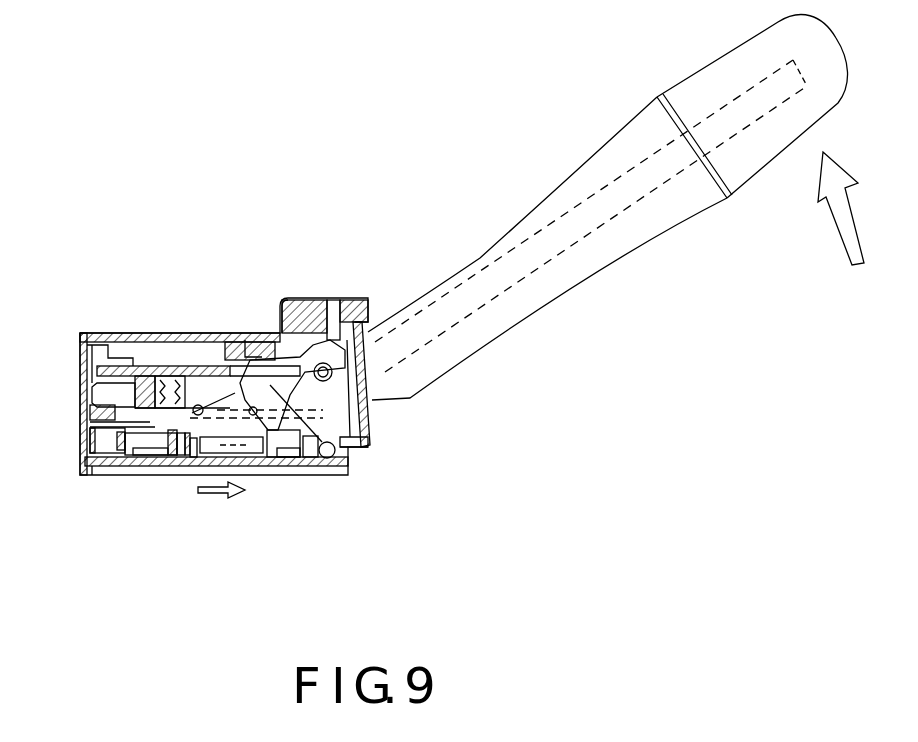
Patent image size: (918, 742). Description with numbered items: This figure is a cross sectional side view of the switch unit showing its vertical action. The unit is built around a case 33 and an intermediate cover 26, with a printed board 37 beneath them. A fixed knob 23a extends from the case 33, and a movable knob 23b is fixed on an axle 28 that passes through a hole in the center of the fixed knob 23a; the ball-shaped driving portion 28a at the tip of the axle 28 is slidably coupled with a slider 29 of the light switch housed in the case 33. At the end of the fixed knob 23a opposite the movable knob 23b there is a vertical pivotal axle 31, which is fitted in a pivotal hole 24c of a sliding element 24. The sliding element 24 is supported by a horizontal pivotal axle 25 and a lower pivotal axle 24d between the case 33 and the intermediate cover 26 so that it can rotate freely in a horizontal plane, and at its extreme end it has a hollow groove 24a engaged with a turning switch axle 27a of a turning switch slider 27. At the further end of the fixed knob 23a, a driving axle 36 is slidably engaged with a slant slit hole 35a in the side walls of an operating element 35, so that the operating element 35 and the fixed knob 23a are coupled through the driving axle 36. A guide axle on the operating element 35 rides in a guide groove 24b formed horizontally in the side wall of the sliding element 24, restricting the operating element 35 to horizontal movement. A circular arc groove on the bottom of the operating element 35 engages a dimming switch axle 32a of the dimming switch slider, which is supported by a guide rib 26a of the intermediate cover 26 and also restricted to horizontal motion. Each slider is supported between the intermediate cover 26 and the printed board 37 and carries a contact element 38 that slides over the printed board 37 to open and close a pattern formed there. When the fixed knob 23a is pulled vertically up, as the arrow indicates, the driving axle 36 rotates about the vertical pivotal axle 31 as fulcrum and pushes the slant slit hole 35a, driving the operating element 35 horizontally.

The fixed knob 23a is at (550, 292).
The movable knob 23b is at (688, 85).
The sliding element 24 is at (100, 334).
The hollow groove 24a is at (144, 365).
The guide groove 24b is at (168, 342).
The pivotal hole 24c is at (370, 330).
The lower pivotal axle 24d is at (279, 452).
The horizontal pivotal axle 25 is at (329, 325).
The intermediate cover 26 is at (72, 466).
The guide rib 26a is at (175, 458).
The turning switch slider 27 is at (135, 455).
The turning switch axle 27a is at (100, 408).
The axle 28 is at (600, 217).
The driving portion 28a is at (350, 455).
The slider of light switch 29 is at (300, 467).
The vertical pivotal axle 31 is at (332, 378).
The dimming switch axle 32a is at (255, 440).
The case 33 is at (293, 305).
The operating element 35 is at (198, 342).
The slant slit hole 35a is at (260, 340).
The driving axle 36 is at (225, 342).
The printed board 37 is at (335, 458).
The contact element 38 is at (240, 450).